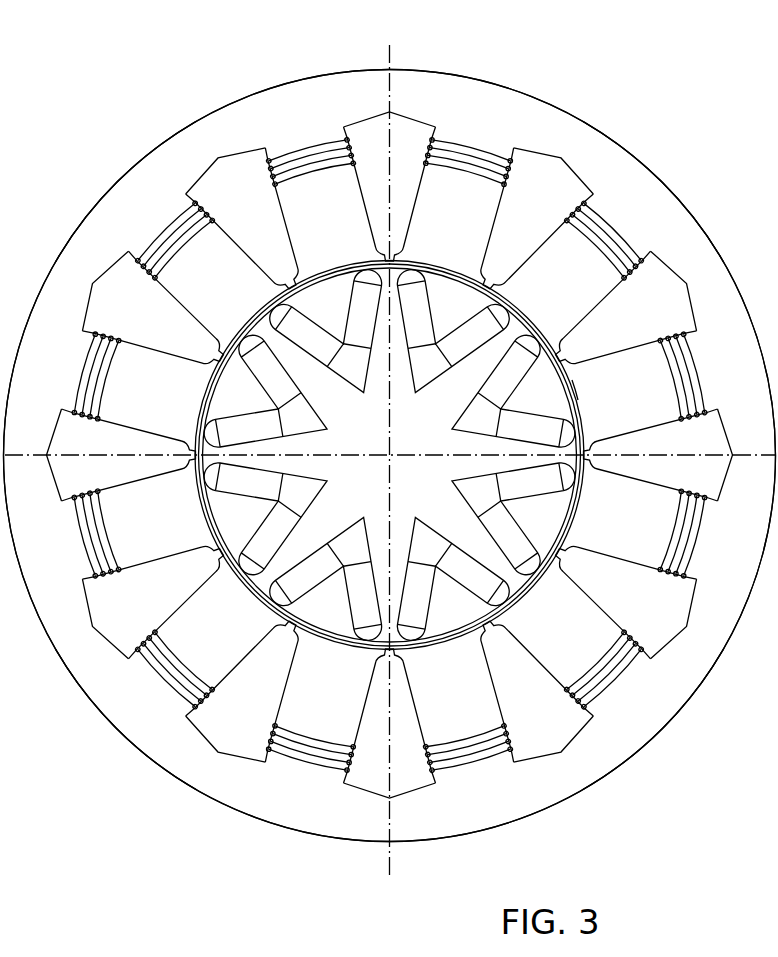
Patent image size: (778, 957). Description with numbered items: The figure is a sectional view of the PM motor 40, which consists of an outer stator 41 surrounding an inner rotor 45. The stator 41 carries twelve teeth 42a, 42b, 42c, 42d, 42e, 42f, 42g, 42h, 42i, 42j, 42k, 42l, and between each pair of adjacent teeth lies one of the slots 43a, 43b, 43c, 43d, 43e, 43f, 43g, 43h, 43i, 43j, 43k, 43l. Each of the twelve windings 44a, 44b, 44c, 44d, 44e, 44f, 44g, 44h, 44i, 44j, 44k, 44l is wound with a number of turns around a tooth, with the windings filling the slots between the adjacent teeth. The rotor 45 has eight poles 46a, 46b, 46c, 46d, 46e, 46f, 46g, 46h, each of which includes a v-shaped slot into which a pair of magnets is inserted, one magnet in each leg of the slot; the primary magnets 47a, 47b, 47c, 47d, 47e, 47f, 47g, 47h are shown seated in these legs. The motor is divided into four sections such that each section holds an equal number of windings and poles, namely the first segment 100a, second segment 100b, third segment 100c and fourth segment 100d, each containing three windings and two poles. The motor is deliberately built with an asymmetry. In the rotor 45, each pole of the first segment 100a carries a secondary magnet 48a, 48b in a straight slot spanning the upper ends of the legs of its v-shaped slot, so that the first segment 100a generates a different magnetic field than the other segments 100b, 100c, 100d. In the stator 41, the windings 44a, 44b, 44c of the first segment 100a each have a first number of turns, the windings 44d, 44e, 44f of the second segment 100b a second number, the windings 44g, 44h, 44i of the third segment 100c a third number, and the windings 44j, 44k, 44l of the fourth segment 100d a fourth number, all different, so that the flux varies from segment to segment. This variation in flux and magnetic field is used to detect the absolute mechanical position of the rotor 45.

The PM motor 40 is at (614, 60).
The stator 41 is at (472, 77).
The tooth 42a is at (464, 249).
The tooth 42b is at (565, 307).
The tooth 42c is at (594, 410).
The tooth 42d is at (594, 526).
The tooth 42e is at (565, 625).
The tooth 42f is at (433, 683).
The tooth 42g is at (315, 683).
The tooth 42h is at (247, 625).
The tooth 42i is at (157, 526).
The tooth 42j is at (157, 410).
The tooth 42k is at (247, 307).
The tooth 42l is at (318, 249).
The slot 43a is at (393, 111).
The slot 43b is at (566, 157).
The slot 43c is at (689, 284).
The slot 43d is at (735, 458).
The slot 43e is at (688, 630).
The slot 43f is at (561, 757).
The slot 43g is at (388, 802).
The slot 43h is at (215, 754).
The slot 43i is at (92, 625).
The slot 43j is at (46, 452).
The slot 43k is at (92, 280).
The slot 43l is at (219, 155).
The winding 44a is at (476, 133).
The winding 44b is at (626, 220).
The winding 44c is at (716, 369).
The winding 44d is at (711, 543).
The winding 44e is at (625, 692).
The winding 44f is at (476, 778).
The winding 44g is at (303, 778).
The winding 44h is at (154, 692).
The winding 44i is at (68, 540).
The winding 44j is at (69, 368).
The winding 44k is at (155, 219).
The winding 44l is at (305, 133).
The rotor 45 is at (390, 455).
The pole 46a is at (442, 386).
The pole 46b is at (478, 440).
The pole 46c is at (477, 470).
The pole 46d is at (441, 525).
The pole 46e is at (338, 525).
The pole 46f is at (303, 469).
The pole 46g is at (302, 440).
The pole 46h is at (338, 386).
The magnet 47a is at (420, 312).
The magnet 47b is at (530, 421).
The magnet 47c is at (525, 494).
The magnet 47d is at (421, 600).
The magnet 47e is at (358, 600).
The magnet 47f is at (246, 493).
The magnet 47g is at (246, 421).
The magnet 47h is at (360, 305).
The secondary magnet 48a is at (485, 287).
The secondary magnet 48b is at (575, 391).
The first segment 100a is at (656, 124).
The second segment 100b is at (126, 127).
The third segment 100c is at (128, 790).
The fourth segment 100d is at (650, 790).